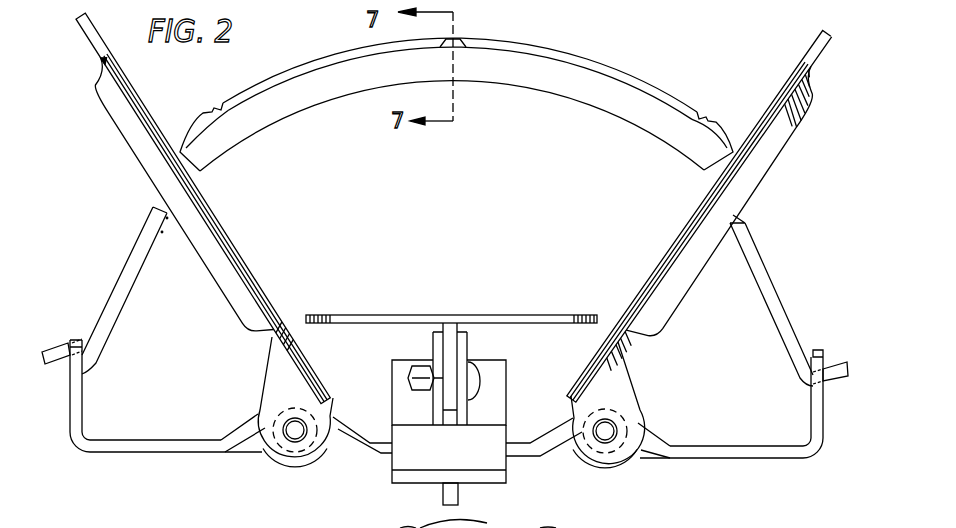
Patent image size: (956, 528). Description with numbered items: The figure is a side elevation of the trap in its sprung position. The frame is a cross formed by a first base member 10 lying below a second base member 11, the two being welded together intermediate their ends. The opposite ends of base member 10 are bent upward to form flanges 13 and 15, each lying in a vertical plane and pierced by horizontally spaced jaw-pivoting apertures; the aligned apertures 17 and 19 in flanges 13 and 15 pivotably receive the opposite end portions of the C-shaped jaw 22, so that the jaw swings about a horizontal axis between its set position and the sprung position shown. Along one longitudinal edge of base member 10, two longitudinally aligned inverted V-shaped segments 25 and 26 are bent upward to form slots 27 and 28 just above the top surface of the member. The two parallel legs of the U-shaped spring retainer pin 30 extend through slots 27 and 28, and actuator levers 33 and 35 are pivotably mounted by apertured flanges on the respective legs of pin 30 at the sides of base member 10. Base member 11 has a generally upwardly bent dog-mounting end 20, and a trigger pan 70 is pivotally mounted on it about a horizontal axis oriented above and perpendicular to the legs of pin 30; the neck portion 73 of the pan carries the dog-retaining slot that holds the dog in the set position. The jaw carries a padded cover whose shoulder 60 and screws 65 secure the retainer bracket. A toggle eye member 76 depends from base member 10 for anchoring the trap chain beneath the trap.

The first base member 10 is at (144, 449).
The second base member 11 is at (492, 462).
The flange 13 is at (72, 410).
The flange 15 is at (822, 428).
The jaw-pivoting aperture 17 is at (88, 383).
The jaw-pivoting aperture 19 is at (830, 400).
The dog-mounting end 20 is at (502, 372).
The jaw 22 is at (130, 278).
The inverted V-shaped segment 25 is at (247, 449).
The inverted V-shaped segment 26 is at (573, 456).
The slot 27 is at (338, 453).
The slot 28 is at (637, 460).
The spring retainer pin 30 is at (293, 438).
The actuator lever 33 is at (115, 108).
The actuator lever 35 is at (777, 147).
The upstanding shoulder 60 is at (438, 520).
The screw 65 is at (400, 527).
The trigger pan 70 is at (517, 315).
The neck portion 73 is at (445, 344).
The toggle eye member 76 is at (458, 497).